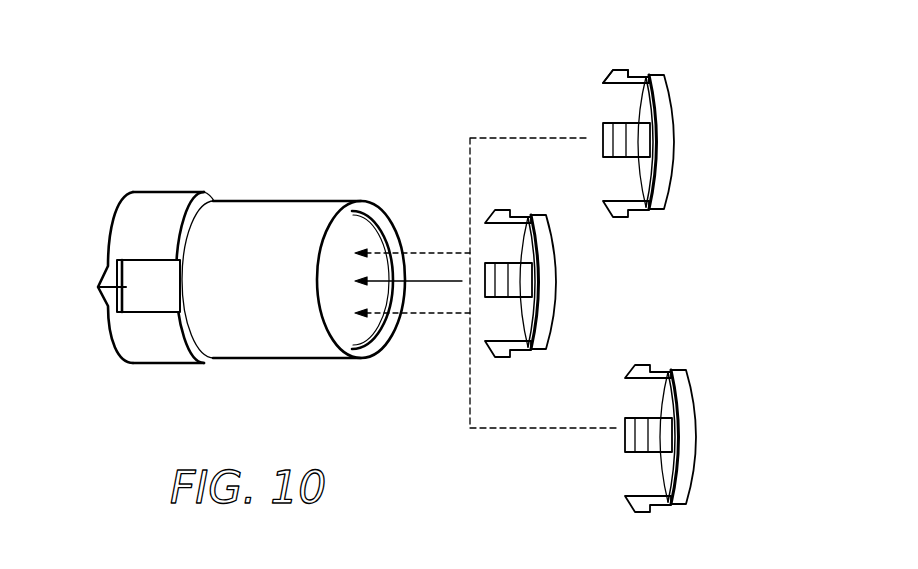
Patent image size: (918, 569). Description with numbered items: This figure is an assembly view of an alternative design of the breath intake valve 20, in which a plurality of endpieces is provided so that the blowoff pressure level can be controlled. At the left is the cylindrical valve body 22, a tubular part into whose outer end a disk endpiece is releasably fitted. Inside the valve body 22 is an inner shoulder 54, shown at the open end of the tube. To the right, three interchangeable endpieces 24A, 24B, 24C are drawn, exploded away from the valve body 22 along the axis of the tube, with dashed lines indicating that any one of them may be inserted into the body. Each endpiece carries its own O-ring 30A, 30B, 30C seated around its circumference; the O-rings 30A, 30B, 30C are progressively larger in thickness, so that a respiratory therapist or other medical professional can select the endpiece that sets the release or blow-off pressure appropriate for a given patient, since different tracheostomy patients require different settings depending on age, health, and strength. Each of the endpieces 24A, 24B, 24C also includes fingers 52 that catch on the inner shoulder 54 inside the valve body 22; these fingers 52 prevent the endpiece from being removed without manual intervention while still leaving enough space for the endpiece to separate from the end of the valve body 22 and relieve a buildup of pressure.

The breath intake valve 20 is at (232, 247).
The cylindrical valve body 22 is at (157, 347).
The inner shoulder 54 is at (384, 222).
The endpiece 24A is at (550, 301).
The endpiece 24B is at (618, 149).
The endpiece 24C is at (698, 448).
The O-ring 30A is at (540, 332).
The O-ring 30B is at (660, 195).
The O-ring 30C is at (682, 475).
The fingers 52 is at (617, 67).